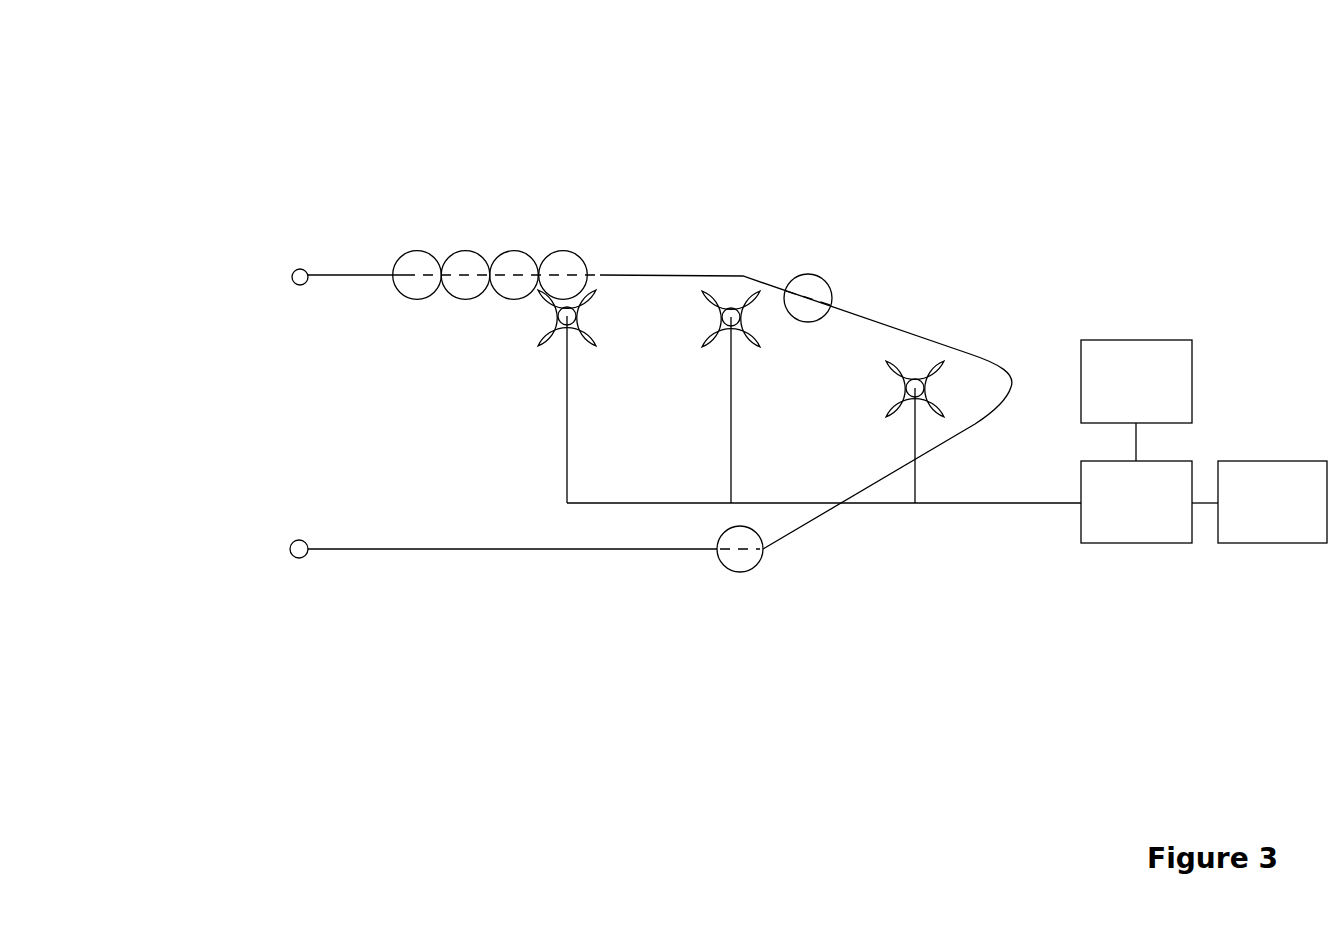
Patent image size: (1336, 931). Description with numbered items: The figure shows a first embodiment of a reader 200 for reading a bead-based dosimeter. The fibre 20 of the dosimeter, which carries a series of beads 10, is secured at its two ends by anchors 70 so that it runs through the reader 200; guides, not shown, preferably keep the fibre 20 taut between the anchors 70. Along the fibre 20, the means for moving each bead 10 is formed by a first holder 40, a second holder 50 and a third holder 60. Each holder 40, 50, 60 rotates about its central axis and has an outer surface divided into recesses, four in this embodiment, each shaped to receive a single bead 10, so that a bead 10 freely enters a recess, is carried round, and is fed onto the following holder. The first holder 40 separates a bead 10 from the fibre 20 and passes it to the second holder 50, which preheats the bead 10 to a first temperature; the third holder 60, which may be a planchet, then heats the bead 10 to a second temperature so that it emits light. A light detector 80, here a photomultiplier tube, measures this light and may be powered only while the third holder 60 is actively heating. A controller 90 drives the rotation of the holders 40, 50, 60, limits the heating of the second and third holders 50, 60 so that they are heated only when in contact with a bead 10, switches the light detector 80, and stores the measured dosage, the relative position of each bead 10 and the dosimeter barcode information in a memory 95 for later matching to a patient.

The reader 200 is at (358, 108).
The bead 10 is at (430, 252).
The fibre 20 is at (376, 275).
The first holder 40 is at (603, 276).
The second holder 50 is at (766, 282).
The third holder 60 is at (938, 368).
The anchors 70 is at (291, 276).
The light detector 80 is at (1138, 340).
The controller 90 is at (1135, 545).
The memory 95 is at (1273, 545).